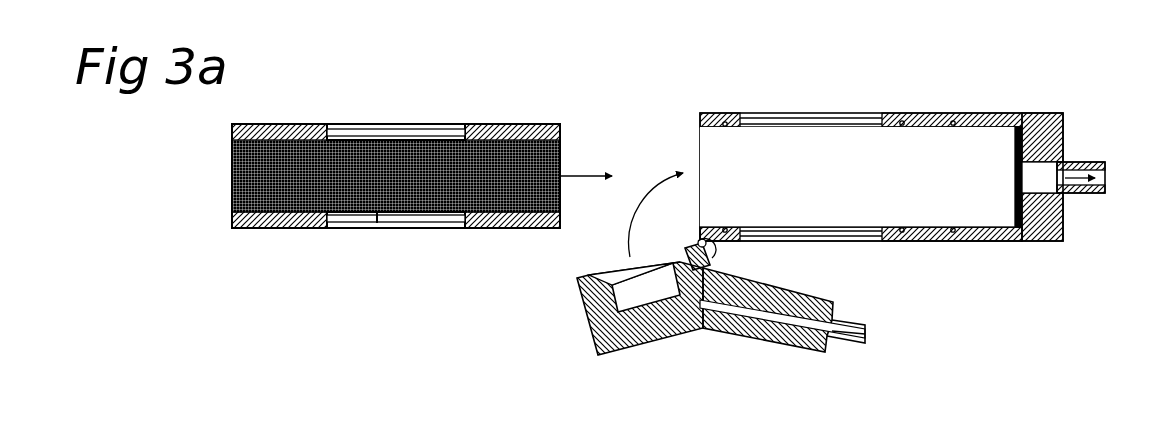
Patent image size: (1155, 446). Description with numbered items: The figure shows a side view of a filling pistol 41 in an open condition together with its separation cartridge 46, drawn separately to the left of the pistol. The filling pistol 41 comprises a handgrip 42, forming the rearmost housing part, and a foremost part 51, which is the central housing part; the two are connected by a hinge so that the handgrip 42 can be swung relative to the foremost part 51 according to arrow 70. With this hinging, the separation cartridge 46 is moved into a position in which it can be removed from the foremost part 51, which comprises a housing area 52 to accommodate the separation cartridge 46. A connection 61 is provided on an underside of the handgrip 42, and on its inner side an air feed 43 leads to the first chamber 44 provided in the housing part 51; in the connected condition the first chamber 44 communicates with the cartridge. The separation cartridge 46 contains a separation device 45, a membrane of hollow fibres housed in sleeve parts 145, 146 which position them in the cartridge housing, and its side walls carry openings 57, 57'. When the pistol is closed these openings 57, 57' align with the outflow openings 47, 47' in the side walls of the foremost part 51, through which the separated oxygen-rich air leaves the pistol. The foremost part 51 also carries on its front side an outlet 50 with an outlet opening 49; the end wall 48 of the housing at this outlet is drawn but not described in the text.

The filling pistol 41 is at (992, 249).
The handgrip 42 is at (701, 336).
The air feed 43 is at (765, 322).
The first chamber 44 is at (633, 295).
The separation device 45 is at (380, 180).
The separation cartridge 46 is at (333, 115).
The outflow opening 47 is at (811, 99).
The outflow opening 47' is at (811, 253).
The end wall 48 is at (1047, 152).
The outlet opening 49 is at (1092, 194).
The outlet 50 is at (1088, 162).
The foremost part 51 is at (928, 236).
The housing area 52 is at (933, 153).
The opening 57 is at (396, 112).
The opening 57' is at (377, 243).
The connection 61 is at (858, 323).
The arrow 70 is at (652, 190).
The sleeve part 145 is at (503, 124).
The sleeve part 146 is at (277, 122).